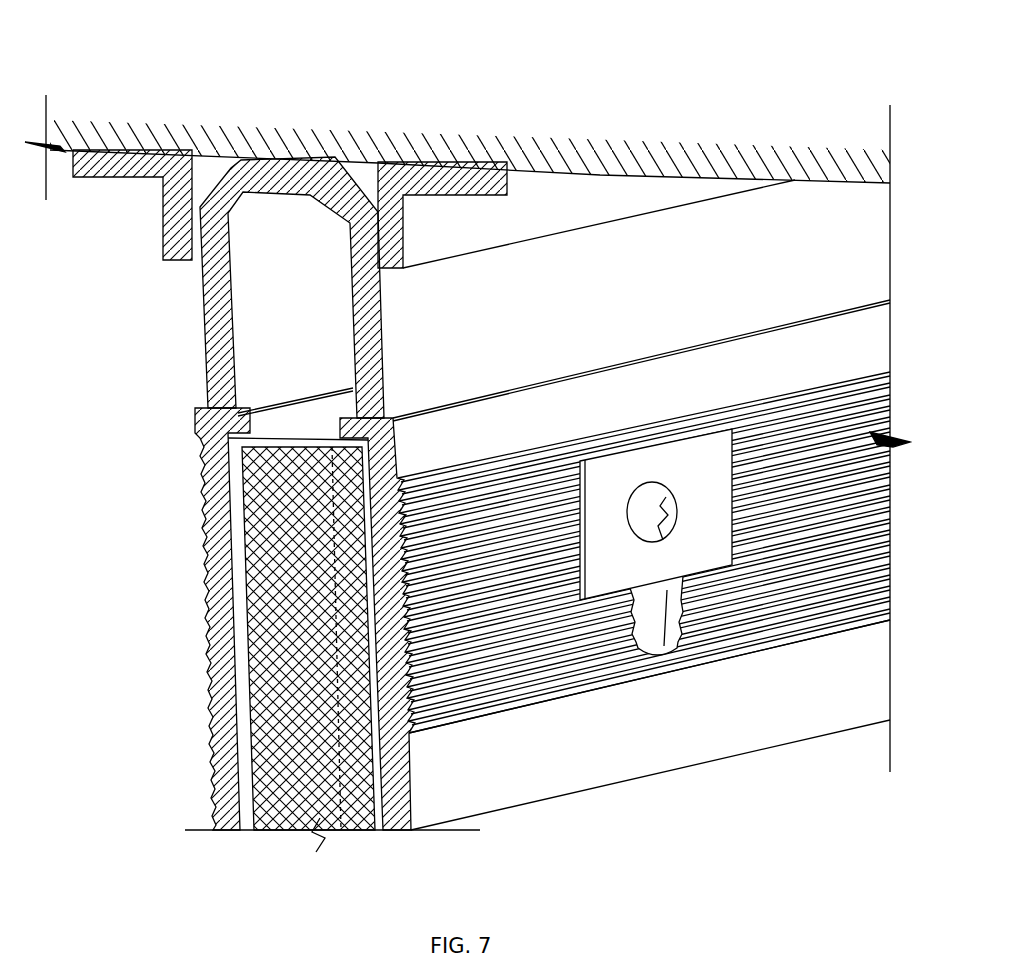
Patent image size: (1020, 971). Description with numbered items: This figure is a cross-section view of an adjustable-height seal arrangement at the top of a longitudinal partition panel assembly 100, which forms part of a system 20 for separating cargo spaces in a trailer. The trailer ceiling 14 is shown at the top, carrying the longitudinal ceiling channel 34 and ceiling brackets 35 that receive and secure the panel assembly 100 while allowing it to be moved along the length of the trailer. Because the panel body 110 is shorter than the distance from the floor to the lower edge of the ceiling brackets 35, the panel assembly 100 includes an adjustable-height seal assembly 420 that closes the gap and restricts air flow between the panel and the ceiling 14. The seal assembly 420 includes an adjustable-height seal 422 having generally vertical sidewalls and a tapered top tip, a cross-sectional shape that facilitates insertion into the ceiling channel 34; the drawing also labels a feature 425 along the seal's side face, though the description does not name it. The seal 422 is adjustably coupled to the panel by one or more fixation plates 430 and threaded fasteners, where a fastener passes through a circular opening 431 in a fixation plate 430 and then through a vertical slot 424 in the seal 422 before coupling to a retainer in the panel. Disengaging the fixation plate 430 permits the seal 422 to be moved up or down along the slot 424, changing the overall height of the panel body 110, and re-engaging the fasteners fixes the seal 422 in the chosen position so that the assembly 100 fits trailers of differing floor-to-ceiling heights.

The ceiling 14 is at (350, 142).
The system 20 is at (84, 57).
The longitudinal ceiling channel 34 is at (524, 257).
The ceiling brackets 35 is at (167, 220).
The longitudinal partition panel assembly 100 is at (64, 341).
The panel body 110 is at (299, 832).
The adjustable-height seal assembly 420 is at (171, 429).
The adjustable-height seal 422 is at (466, 328).
The vertical slot 424 is at (672, 625).
The fins 425 is at (507, 684).
The fixation plate 430 is at (717, 550).
The circular opening 431 is at (650, 513).